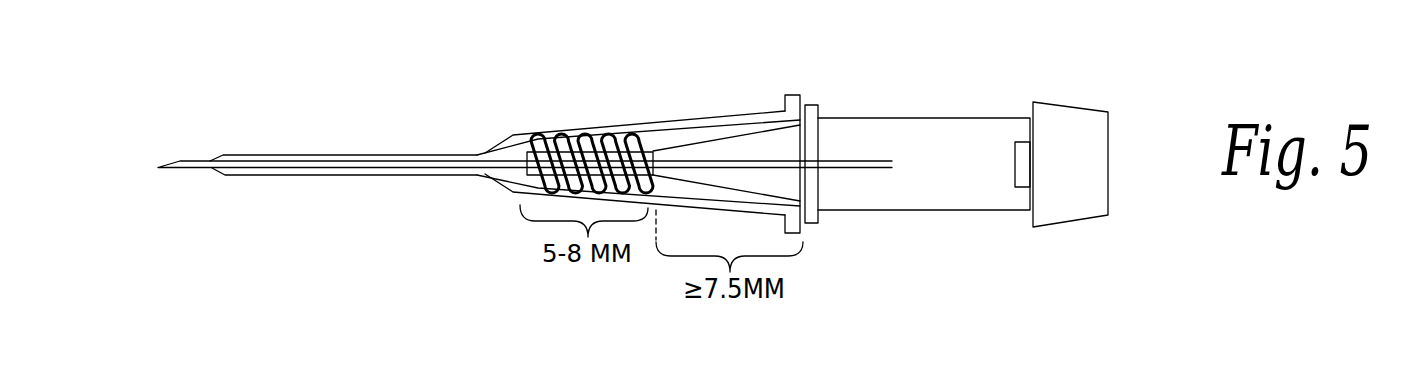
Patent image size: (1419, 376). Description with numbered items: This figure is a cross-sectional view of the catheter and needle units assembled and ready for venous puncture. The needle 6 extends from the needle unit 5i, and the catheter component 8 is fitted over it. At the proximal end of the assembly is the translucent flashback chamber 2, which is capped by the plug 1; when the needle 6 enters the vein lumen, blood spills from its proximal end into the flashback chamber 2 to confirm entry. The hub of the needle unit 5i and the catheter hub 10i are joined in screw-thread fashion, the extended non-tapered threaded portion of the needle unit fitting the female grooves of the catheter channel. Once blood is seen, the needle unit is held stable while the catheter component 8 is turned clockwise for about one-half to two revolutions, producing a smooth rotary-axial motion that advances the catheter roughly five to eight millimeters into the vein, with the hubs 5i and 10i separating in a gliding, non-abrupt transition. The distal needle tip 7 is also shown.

The plug 1 is at (1088, 163).
The flashback chamber 2 is at (968, 193).
The needle unit 5i is at (1015, 98).
The needle 6 is at (893, 165).
The needle tip 7 is at (171, 161).
The catheter component 8 is at (252, 153).
The catheter hub 10i is at (520, 97).